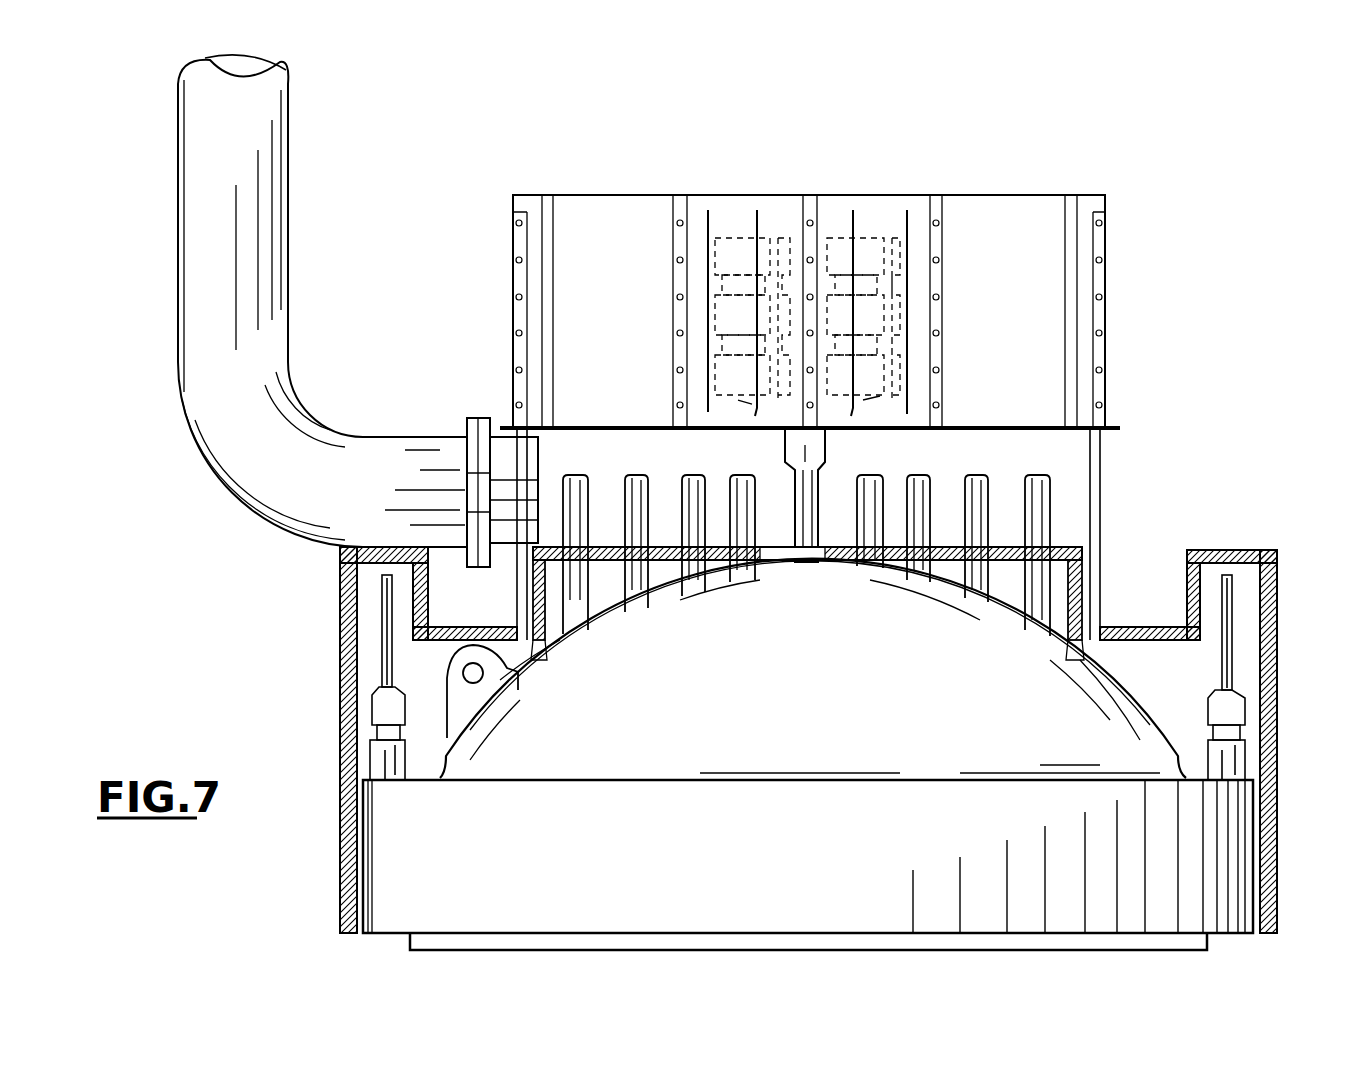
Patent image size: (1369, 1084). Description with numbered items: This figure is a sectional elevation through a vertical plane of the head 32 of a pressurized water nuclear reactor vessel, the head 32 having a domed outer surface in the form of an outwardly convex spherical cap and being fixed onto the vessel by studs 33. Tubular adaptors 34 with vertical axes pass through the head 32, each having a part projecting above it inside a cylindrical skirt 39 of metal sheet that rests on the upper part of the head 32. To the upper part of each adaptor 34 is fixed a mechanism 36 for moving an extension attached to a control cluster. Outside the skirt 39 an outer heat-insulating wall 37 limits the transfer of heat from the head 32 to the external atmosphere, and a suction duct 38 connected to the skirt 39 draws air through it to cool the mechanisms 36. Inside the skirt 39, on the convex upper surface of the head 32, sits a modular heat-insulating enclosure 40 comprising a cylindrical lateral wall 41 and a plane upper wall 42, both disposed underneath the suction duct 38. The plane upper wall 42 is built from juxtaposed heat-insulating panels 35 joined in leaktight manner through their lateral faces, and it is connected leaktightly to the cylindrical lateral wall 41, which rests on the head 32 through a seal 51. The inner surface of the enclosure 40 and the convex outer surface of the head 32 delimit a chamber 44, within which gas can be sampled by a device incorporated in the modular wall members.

The head 32 is at (1038, 736).
The studs 33 is at (380, 703).
The tubular adaptors 34 is at (742, 513).
The heat-insulating panels 35 is at (821, 562).
The mechanism 36 is at (871, 326).
The outer heat-insulating wall 37 is at (1268, 872).
The suction duct 38 is at (238, 425).
The cylindrical skirt 39 is at (1100, 553).
The heat-insulating enclosure 40 is at (1088, 590).
The cylindrical lateral wall 41 is at (548, 603).
The plane upper wall 42 is at (1080, 545).
The chamber 44 is at (1060, 619).
The seal 51 is at (537, 650).